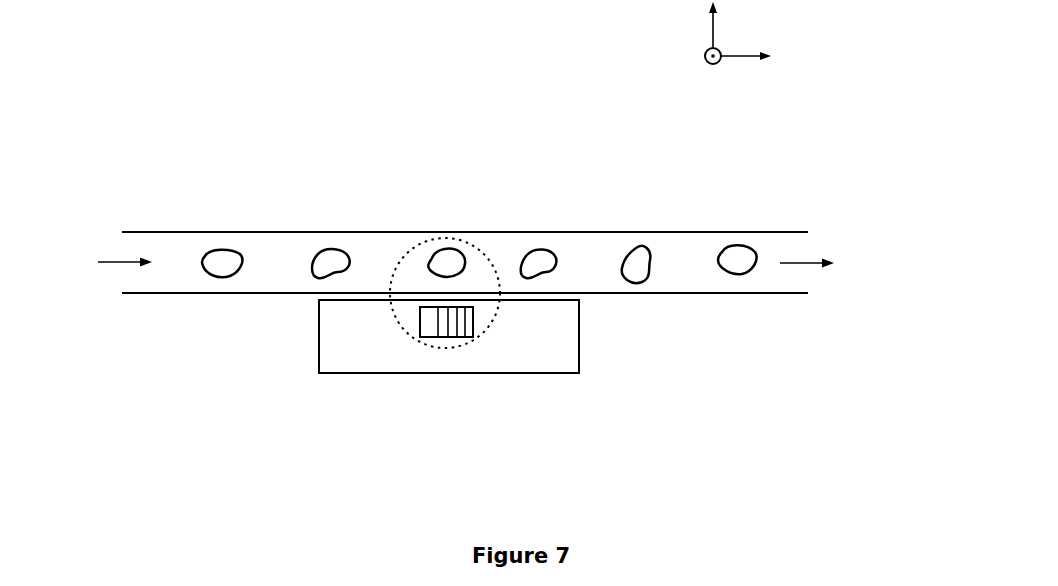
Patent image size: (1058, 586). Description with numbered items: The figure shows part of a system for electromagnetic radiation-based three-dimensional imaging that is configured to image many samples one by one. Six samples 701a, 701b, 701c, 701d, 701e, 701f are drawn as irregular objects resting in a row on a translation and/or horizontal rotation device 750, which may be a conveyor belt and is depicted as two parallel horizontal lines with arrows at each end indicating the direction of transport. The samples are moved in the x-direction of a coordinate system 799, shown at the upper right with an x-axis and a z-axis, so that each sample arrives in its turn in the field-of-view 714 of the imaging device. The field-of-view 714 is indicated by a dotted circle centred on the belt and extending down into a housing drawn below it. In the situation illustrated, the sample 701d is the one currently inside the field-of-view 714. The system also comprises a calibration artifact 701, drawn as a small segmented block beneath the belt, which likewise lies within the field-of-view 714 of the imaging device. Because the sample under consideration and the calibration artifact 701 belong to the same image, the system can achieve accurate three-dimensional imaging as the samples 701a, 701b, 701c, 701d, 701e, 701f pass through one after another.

The translation and/or horizontal rotation device 750 is at (285, 253).
The calibration artifact 701 is at (433, 322).
The field-of-view 714 is at (490, 330).
The sample 701a is at (735, 257).
The sample 701b is at (637, 262).
The sample 701c is at (542, 261).
The sample 701d is at (452, 262).
The sample 701e is at (332, 260).
The sample 701f is at (220, 262).
The coordinate system 799 is at (763, 35).